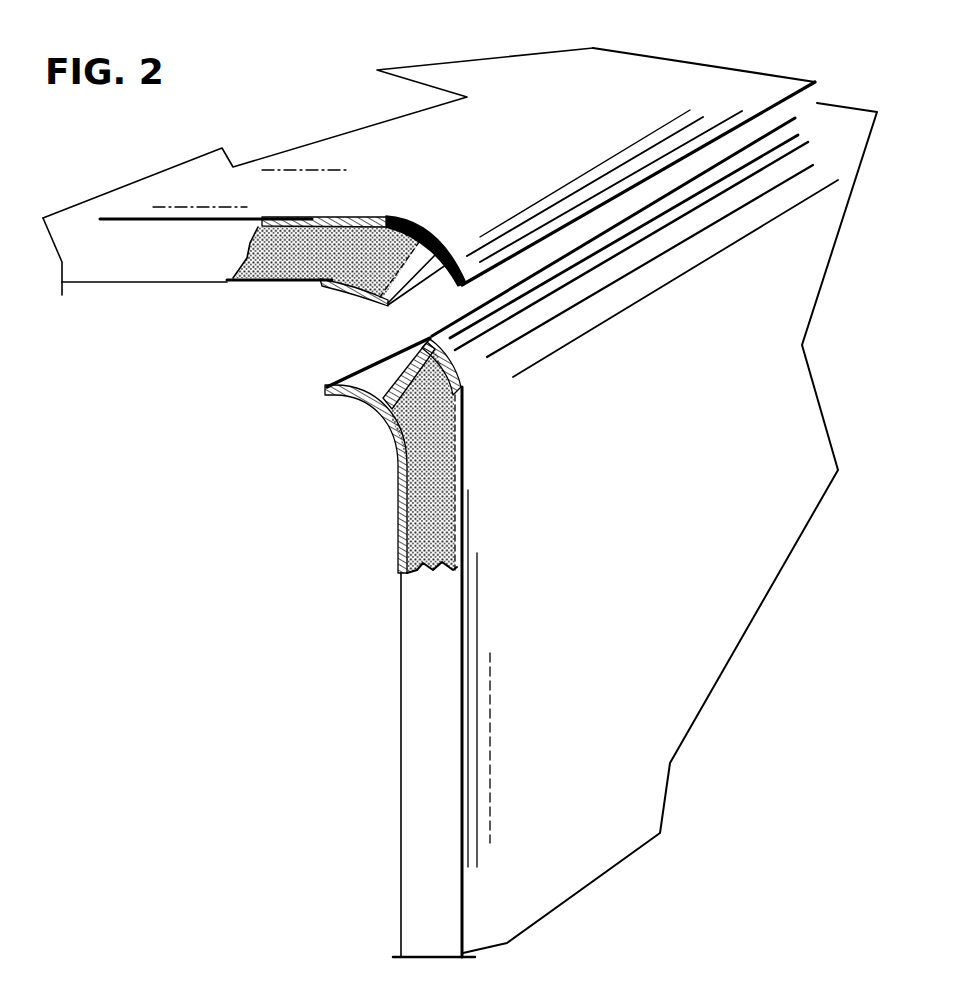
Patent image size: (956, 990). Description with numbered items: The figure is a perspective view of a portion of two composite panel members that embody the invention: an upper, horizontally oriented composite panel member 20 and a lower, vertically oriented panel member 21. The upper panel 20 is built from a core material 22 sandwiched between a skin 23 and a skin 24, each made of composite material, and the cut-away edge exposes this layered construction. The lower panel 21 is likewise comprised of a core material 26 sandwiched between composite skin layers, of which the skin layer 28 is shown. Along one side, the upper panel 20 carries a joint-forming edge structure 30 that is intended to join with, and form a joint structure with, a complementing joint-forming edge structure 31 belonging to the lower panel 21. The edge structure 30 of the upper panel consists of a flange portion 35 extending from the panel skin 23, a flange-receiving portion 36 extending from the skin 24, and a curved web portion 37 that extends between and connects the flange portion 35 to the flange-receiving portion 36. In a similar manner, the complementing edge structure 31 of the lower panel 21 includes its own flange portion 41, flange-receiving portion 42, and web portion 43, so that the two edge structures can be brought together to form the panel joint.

The composite panel member 20 is at (590, 68).
The panel member 21 is at (777, 295).
The core material 22 is at (262, 253).
The skin 23 is at (283, 221).
The skin 24 is at (267, 283).
The core material 26 is at (447, 540).
The skin layer 28 is at (400, 545).
The joint-forming edge structure 30 is at (502, 215).
The complementing joint-forming edge structure 31 is at (412, 452).
The flange portion 35 is at (460, 243).
The flange-receiving portion 36 is at (348, 288).
The web portion 37 is at (413, 231).
The flange portion 41 is at (340, 405).
The flange-receiving portion 42 is at (458, 369).
The web portion 43 is at (385, 400).